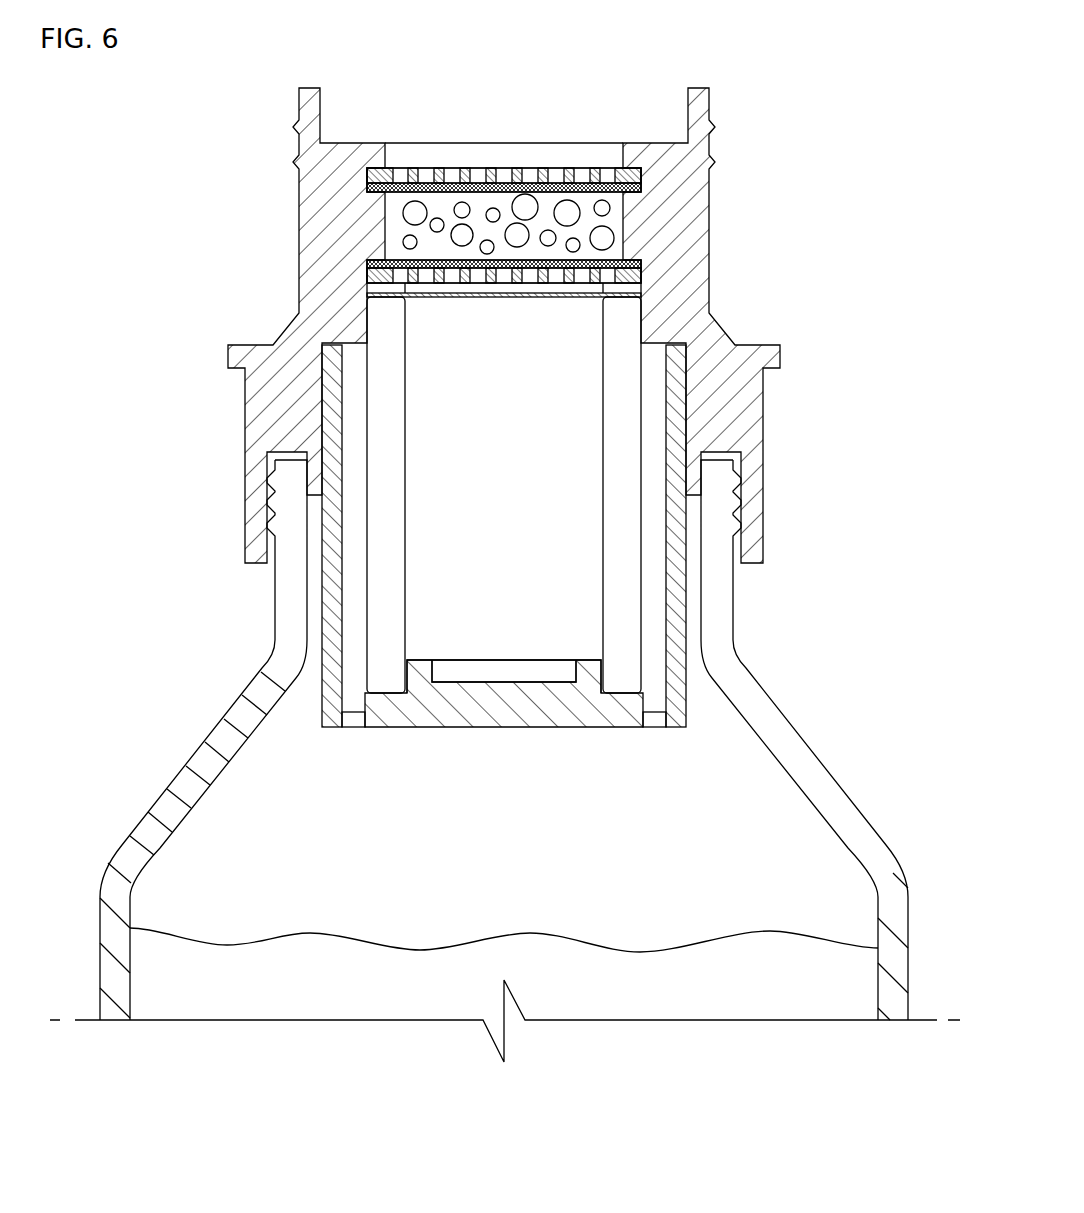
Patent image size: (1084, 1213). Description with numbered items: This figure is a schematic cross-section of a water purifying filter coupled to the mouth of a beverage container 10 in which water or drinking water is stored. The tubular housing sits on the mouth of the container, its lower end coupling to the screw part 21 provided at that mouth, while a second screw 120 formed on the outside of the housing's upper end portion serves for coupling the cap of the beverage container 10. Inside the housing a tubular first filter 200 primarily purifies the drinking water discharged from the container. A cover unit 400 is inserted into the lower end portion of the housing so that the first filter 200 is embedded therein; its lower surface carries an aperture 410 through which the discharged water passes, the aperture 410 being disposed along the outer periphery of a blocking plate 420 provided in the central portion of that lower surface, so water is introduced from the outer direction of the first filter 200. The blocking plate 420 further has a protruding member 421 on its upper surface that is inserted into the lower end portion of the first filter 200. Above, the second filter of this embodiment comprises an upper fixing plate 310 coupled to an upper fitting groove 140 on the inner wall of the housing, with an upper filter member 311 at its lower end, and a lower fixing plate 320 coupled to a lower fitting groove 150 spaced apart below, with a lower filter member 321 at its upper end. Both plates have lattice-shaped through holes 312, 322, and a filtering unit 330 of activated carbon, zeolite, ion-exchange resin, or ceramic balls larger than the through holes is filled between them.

The beverage container 10 is at (847, 817).
The screw part 21 is at (743, 498).
The second screw 120 is at (713, 123).
The upper fitting groove 140 is at (388, 168).
The lower fitting groove 150 is at (375, 308).
The first filter 200 is at (630, 598).
The upper fixing plate 310 is at (523, 141).
The upper filter member 311 is at (368, 186).
The through holes 312 is at (502, 170).
The lower fixing plate 320 is at (522, 309).
The lower filter member 321 is at (368, 264).
The through holes 322 is at (506, 284).
The filtering unit 330 is at (600, 222).
The cover unit 400 is at (395, 589).
The aperture 410 is at (352, 722).
The blocking plate 420 is at (504, 691).
The protruding member 421 is at (423, 665).